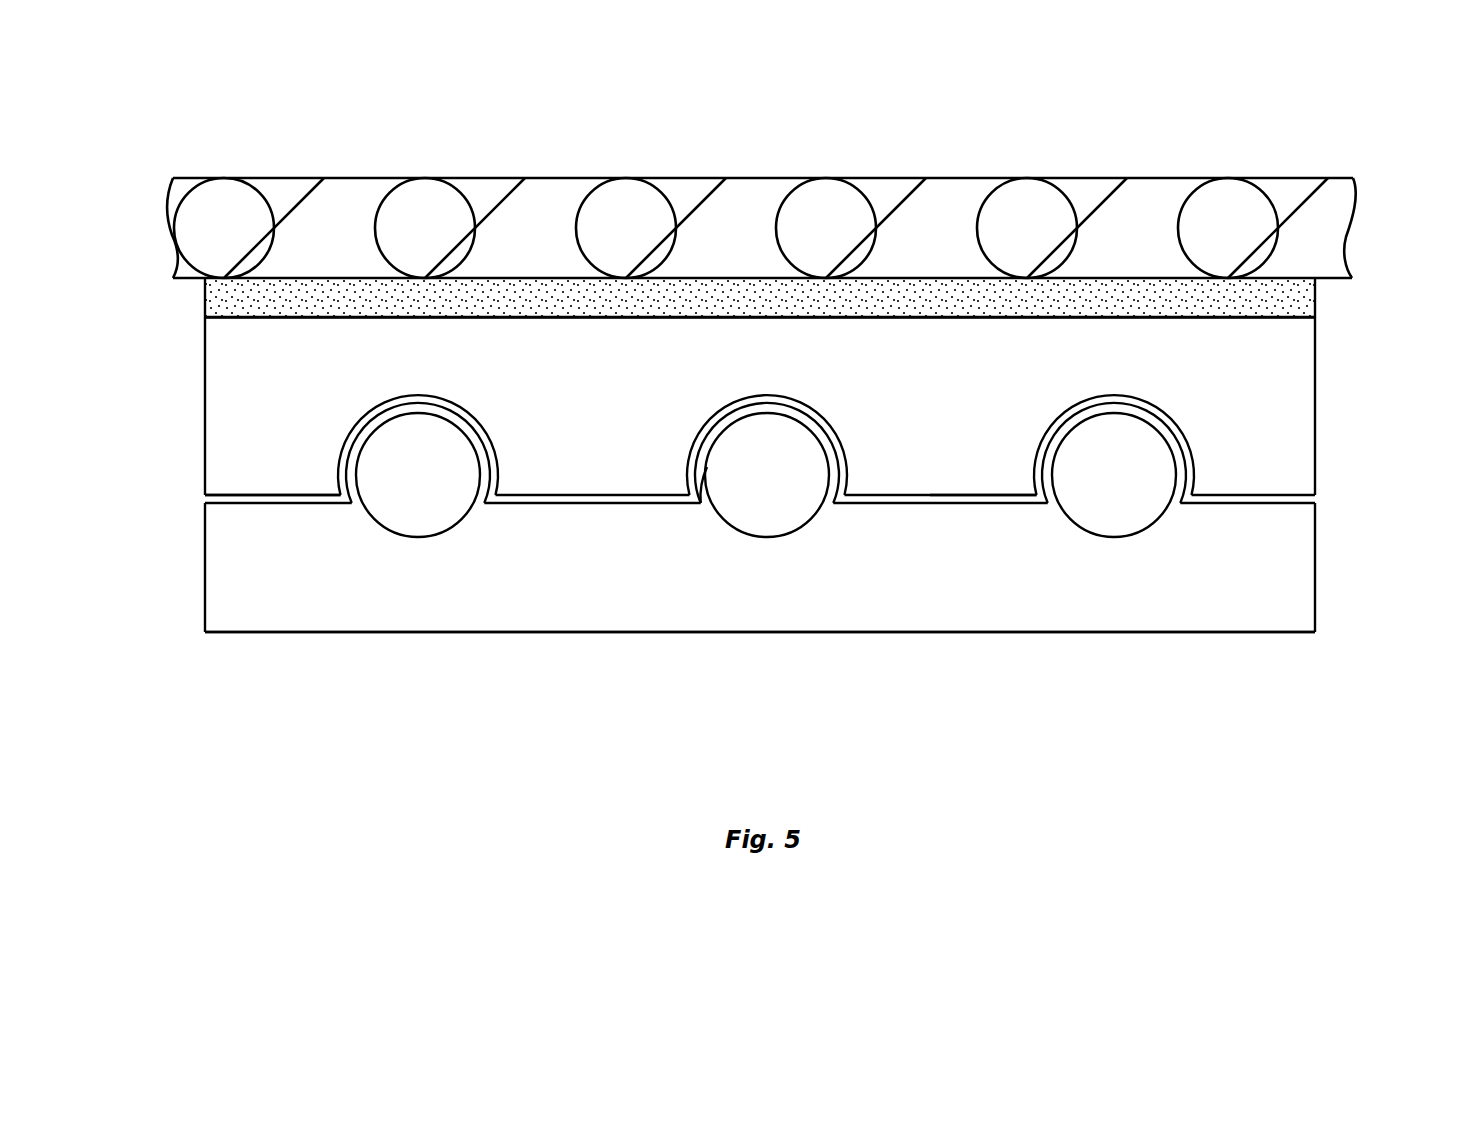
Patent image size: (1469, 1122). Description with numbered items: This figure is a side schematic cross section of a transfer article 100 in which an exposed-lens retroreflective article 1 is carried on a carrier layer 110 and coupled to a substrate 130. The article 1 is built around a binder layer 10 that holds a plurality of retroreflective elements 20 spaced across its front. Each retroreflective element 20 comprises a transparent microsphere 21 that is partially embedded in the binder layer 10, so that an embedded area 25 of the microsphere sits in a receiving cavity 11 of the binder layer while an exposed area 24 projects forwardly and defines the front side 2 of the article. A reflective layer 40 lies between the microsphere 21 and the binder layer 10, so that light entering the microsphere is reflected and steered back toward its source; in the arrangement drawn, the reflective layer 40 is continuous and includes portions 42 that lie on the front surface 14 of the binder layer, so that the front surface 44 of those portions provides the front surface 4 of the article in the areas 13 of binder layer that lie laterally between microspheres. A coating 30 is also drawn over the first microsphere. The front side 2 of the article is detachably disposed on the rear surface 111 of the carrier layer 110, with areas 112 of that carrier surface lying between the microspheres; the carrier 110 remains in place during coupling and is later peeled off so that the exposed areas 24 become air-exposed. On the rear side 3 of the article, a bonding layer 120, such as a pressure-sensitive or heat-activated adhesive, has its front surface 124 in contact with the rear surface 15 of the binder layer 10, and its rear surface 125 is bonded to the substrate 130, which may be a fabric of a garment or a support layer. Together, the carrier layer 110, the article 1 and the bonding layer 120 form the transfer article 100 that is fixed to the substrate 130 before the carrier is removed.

The exposed-lens retroreflective article 1 is at (762, 488).
The front side 2 is at (745, 733).
The rear side 3 is at (726, 185).
The front surface 4 is at (1247, 497).
The binder layer 10 is at (794, 406).
The receiving cavity 11 is at (1122, 482).
The areas of binder layer laterally between microspheres 13 is at (590, 519).
The front surface of binder layer 14 is at (963, 497).
The rear surface of binder layer 15 is at (232, 317).
The retroreflective element 20 is at (760, 600).
The transparent microsphere 21 is at (753, 496).
The exposed area 24 is at (398, 535).
The embedded area 25 is at (707, 467).
The first coating 30 is at (422, 408).
The reflective layer 40 is at (790, 402).
The reflective layer portions 42 is at (878, 500).
The front surface of reflective layer portions 44 is at (275, 505).
The transfer article 100 is at (1401, 276).
The carrier layer 110 is at (575, 616).
The rear surface of carrier layer 111 is at (242, 502).
The areas between microspheres 112 is at (560, 502).
The bonding layer 120 is at (762, 300).
The front surface of bonding layer 124 is at (288, 318).
The rear surface of bonding layer 125 is at (213, 278).
The substrate 130 is at (950, 197).